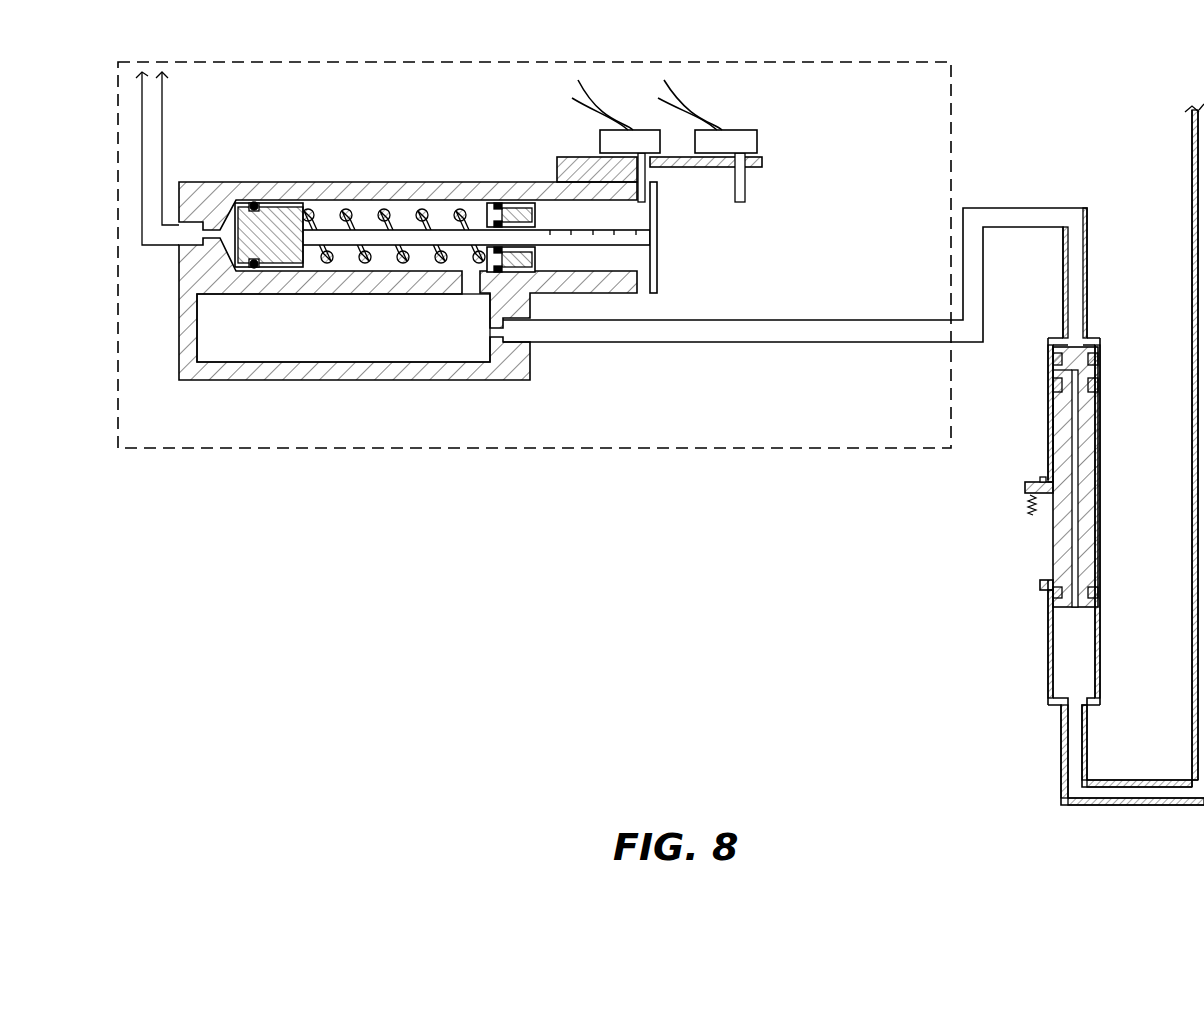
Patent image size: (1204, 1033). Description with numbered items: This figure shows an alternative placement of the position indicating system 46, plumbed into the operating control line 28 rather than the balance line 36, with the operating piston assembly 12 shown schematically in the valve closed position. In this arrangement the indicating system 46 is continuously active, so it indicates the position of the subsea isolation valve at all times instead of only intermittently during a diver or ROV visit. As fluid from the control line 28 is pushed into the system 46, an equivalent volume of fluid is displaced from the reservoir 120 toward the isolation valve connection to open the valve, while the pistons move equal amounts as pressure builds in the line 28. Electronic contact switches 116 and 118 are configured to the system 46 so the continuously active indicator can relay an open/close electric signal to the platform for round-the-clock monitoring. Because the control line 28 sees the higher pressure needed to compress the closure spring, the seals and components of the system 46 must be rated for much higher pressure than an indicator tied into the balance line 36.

The operating piston assembly 12 is at (1020, 557).
The operating control line 28 is at (162, 119).
The balance line 36 is at (1192, 168).
The position indicating system 46 is at (354, 462).
The electronic contact switch 116 is at (588, 137).
The electronic contact switch 118 is at (778, 141).
The reservoir 120 is at (262, 345).